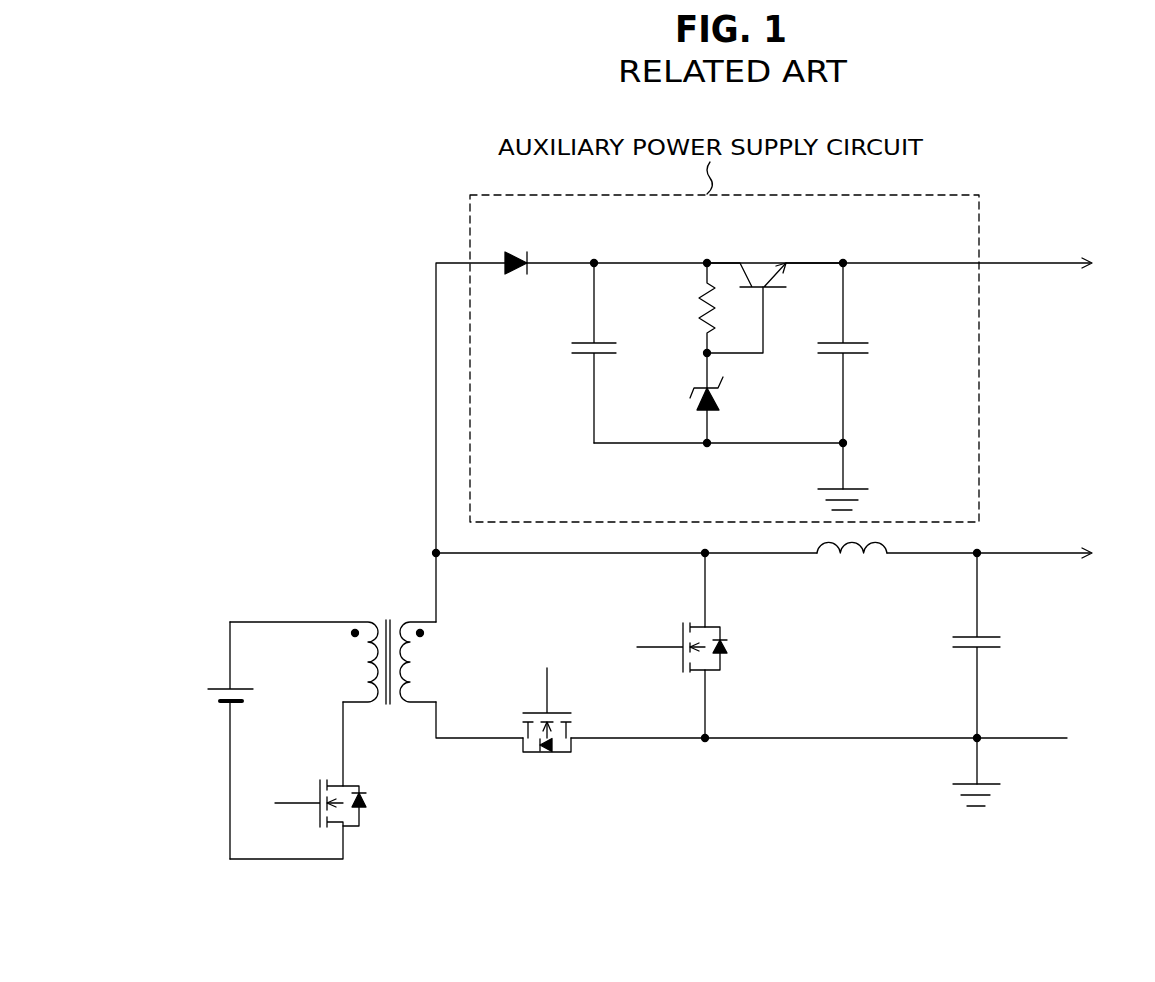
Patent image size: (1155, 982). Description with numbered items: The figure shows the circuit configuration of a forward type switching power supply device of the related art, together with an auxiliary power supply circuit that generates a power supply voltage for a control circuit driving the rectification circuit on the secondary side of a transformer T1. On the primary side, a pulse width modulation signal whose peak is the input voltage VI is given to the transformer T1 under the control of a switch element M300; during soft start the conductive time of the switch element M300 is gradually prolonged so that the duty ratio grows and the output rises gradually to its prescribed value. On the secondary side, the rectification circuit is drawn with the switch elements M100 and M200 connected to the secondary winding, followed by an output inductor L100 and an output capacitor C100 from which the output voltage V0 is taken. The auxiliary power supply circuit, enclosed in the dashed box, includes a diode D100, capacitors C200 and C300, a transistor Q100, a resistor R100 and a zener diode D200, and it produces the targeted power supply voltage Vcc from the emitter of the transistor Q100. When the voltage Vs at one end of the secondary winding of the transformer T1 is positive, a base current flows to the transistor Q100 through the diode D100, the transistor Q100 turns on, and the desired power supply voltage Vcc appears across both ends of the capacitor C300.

The diode D100 is at (512, 277).
The capacitor C200 is at (571, 347).
The resistor R100 is at (699, 307).
The transistor Q100 is at (762, 278).
The zener diode D200 is at (699, 408).
The capacitor C300 is at (868, 349).
The voltage of one end of the secondary winding Vs is at (431, 547).
The transformer T1 is at (382, 617).
The input voltage VI is at (214, 740).
The switch element M300 is at (348, 786).
The secondary side MOSFET M200 is at (523, 748).
The synchronous rectifier MOSFET M100 is at (716, 628).
The output inductor L100 is at (851, 560).
The output capacitor C100 is at (1006, 643).
The output voltage V0 is at (1117, 554).
The power supply voltage Vcc is at (1125, 263).